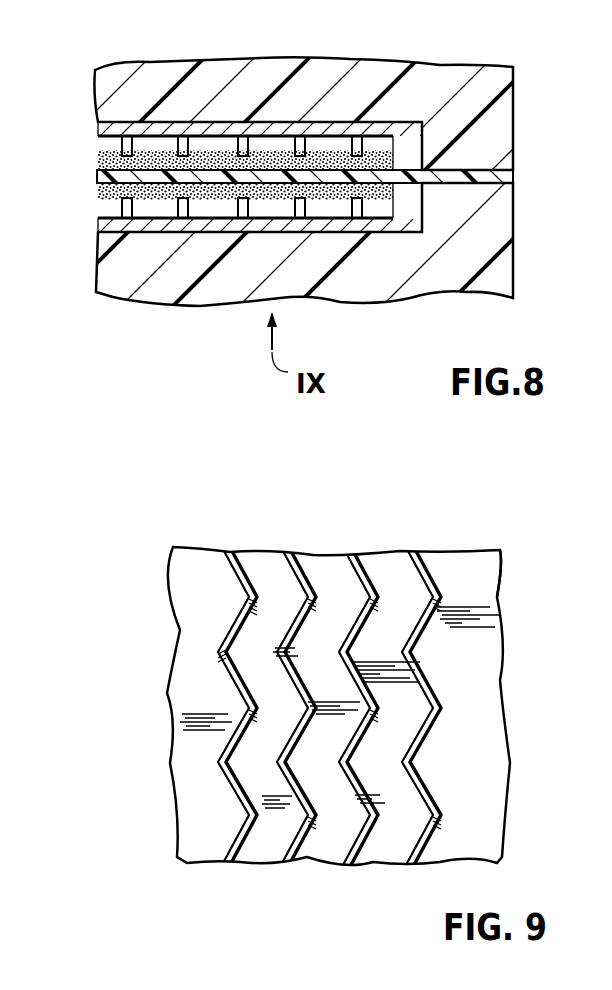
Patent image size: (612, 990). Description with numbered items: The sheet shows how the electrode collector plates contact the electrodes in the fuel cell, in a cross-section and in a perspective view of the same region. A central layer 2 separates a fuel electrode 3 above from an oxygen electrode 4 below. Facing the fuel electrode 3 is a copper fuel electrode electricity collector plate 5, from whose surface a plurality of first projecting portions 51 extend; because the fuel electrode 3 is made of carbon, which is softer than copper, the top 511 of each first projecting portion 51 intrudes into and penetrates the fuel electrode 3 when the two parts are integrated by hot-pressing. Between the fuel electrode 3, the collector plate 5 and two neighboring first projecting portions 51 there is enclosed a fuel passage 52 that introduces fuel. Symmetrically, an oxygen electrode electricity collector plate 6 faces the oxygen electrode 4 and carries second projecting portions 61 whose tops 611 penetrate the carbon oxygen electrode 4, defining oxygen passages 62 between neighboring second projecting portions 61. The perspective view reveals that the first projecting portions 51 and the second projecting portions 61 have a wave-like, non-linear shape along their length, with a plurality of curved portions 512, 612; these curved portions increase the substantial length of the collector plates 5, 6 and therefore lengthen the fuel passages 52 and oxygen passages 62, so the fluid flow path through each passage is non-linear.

In FIG. 8, the base plate 2 is at (513, 172).
In FIG. 8, the fuel electrode 3 is at (395, 158).
In FIG. 8, the oxygen electrode 4 is at (397, 192).
In FIG. 8, the fuel electrode electricity collector plate 5 is at (386, 116).
In FIG. 9, the fuel electrode electricity collector plate 5 is at (450, 552).
In FIG. 8, the oxygen electrode electricity collector plate 6 is at (381, 235).
In FIG. 8, the first projecting portion 51 is at (127, 150).
In FIG. 9, the first projecting portion 51 is at (414, 552).
In FIG. 8, the fuel passage 52 is at (325, 147).
In FIG. 9, the fuel passage 52 is at (254, 752).
In FIG. 8, the top of first projecting portion 511 is at (360, 147).
In FIG. 9, the curved portion 512 is at (250, 708).
In FIG. 8, the second projecting portion 61 is at (130, 212).
In FIG. 9, the second projecting portion 61 is at (312, 683).
In FIG. 8, the oxygen passage 62 is at (322, 220).
In FIG. 9, the oxygen passage 62 is at (211, 728).
In FIG. 8, the top of second projecting portion 611 is at (353, 218).
In FIG. 9, the curved portion 612 is at (268, 618).